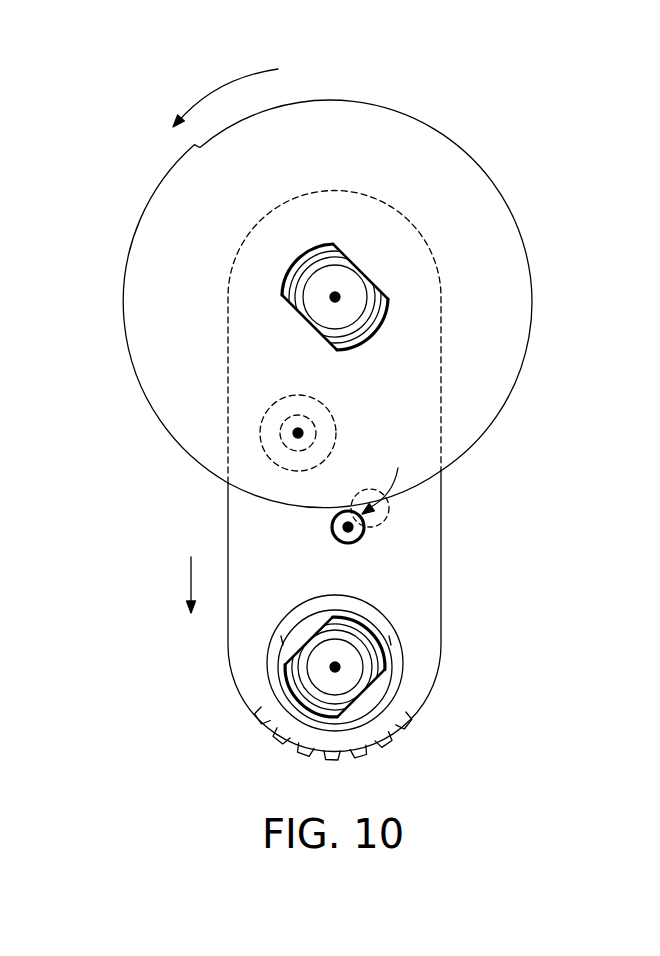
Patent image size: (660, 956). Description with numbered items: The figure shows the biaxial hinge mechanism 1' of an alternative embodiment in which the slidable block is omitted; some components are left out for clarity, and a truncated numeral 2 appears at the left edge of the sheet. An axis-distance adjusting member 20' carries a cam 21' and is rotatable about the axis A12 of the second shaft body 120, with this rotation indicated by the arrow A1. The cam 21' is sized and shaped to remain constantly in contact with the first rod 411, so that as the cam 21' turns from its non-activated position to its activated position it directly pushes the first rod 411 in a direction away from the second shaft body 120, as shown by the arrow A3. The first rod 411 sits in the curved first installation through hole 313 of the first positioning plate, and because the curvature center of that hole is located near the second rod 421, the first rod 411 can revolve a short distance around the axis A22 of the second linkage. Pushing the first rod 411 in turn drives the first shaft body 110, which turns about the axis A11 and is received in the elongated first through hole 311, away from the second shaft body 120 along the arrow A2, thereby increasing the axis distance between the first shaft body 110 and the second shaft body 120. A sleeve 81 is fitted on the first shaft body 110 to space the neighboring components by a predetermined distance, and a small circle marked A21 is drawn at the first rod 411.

The biaxial hinge mechanism 1' is at (447, 35).
The housing body 2 is at (6, 272).
The axis-distance adjusting member 20' is at (309, 421).
The cam 21' is at (138, 179).
The arrow A1 is at (225, 94).
The arrow A2 is at (191, 602).
The arrow A3 is at (388, 478).
The axis A12 is at (343, 297).
The second shaft body 120 is at (345, 308).
The axis A22 is at (293, 433).
The second rod 421 is at (284, 458).
The first installation through hole 313 is at (406, 510).
The first rod 411 is at (352, 527).
The pin axis A21 is at (365, 537).
The first through hole 311 is at (367, 596).
The sleeve 81 is at (395, 653).
The first shaft body 110 is at (353, 667).
The axis A11 is at (338, 670).